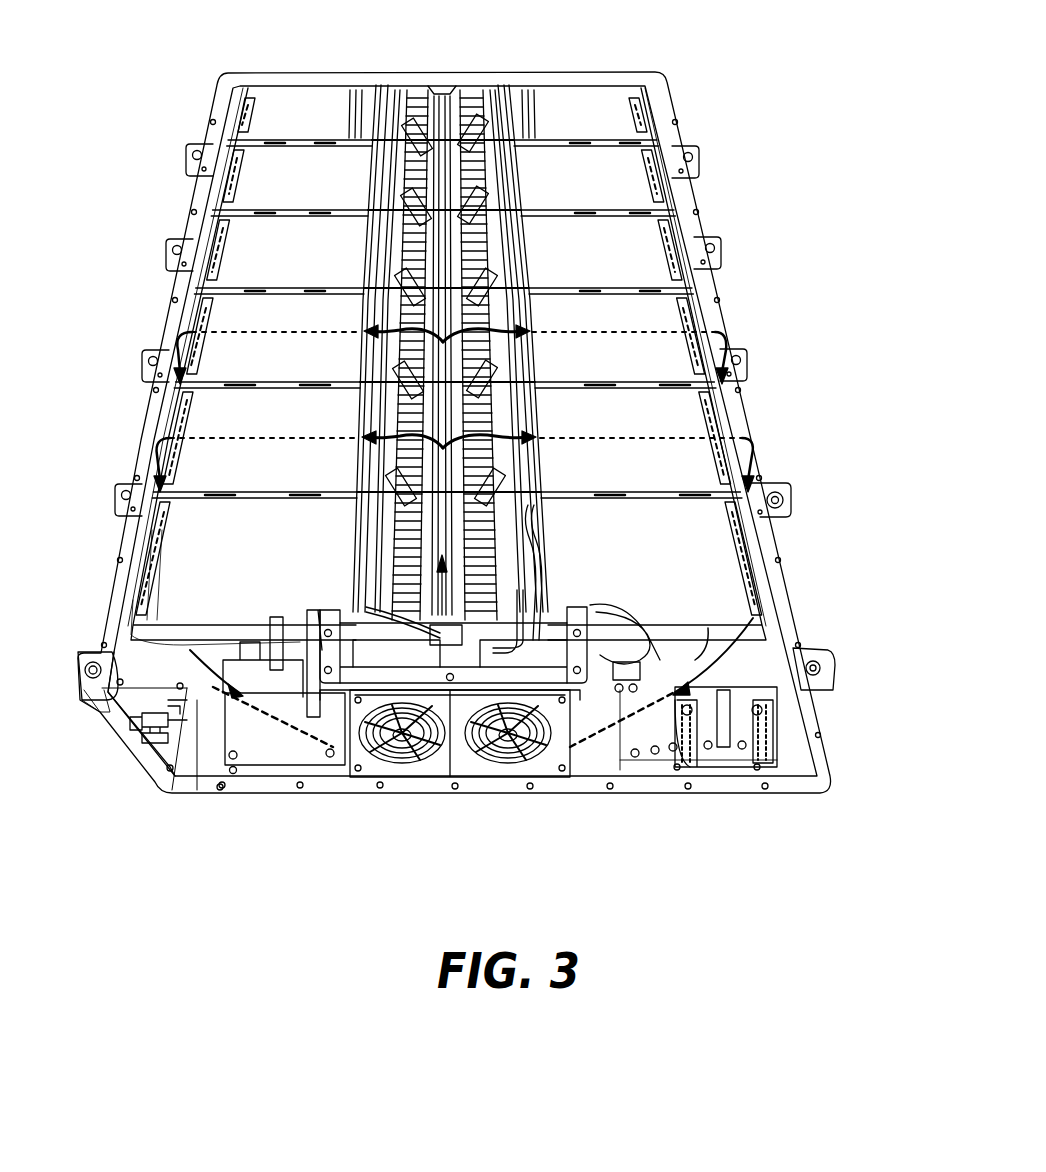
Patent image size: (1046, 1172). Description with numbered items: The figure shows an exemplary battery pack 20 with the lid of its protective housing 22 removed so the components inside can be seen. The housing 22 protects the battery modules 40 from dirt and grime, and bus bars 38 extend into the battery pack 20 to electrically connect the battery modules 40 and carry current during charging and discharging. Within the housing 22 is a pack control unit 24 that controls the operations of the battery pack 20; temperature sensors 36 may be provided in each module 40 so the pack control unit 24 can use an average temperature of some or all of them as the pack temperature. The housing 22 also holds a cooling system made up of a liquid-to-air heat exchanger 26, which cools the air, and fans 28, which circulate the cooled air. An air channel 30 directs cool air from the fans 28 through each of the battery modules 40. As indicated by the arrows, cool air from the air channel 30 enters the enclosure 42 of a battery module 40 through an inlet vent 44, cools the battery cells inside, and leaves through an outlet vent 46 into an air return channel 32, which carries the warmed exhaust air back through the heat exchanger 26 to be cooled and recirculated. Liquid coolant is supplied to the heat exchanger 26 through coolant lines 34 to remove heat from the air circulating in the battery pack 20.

The battery pack 20 is at (822, 210).
The protective housing 22 is at (113, 634).
The pack control unit 24 is at (275, 740).
The liquid-to-air heat exchanger 26 is at (382, 675).
The fans 28 is at (400, 747).
The air channel 30 is at (447, 190).
The air return channel 32 is at (228, 110).
The coolant lines 34 is at (137, 723).
The temperature sensors 36 is at (217, 578).
The bus bars 38 is at (365, 513).
The battery modules 40 is at (309, 116).
The enclosure 42 is at (203, 538).
The inlet vent 44 is at (377, 397).
The outlet vent 46 is at (153, 432).